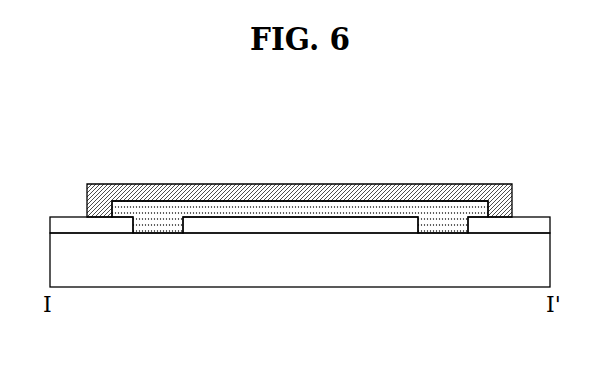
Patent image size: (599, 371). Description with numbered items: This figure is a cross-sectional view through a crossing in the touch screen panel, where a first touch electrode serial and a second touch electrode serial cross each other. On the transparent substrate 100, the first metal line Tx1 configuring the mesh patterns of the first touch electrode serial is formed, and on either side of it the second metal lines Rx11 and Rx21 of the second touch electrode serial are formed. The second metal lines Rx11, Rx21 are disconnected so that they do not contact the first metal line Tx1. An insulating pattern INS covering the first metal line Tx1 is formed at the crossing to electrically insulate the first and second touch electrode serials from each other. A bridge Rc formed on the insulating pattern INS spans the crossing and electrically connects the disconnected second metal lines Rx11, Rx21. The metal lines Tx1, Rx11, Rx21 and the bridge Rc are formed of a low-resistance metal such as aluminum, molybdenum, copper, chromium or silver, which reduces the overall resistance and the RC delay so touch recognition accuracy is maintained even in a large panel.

The transparent substrate 100 is at (304, 272).
The second metal line Rx11 is at (73, 224).
The first metal line Tx1 is at (305, 226).
The second metal line Rx21 is at (527, 223).
The insulating pattern INS is at (435, 208).
The bridge Rc is at (202, 192).